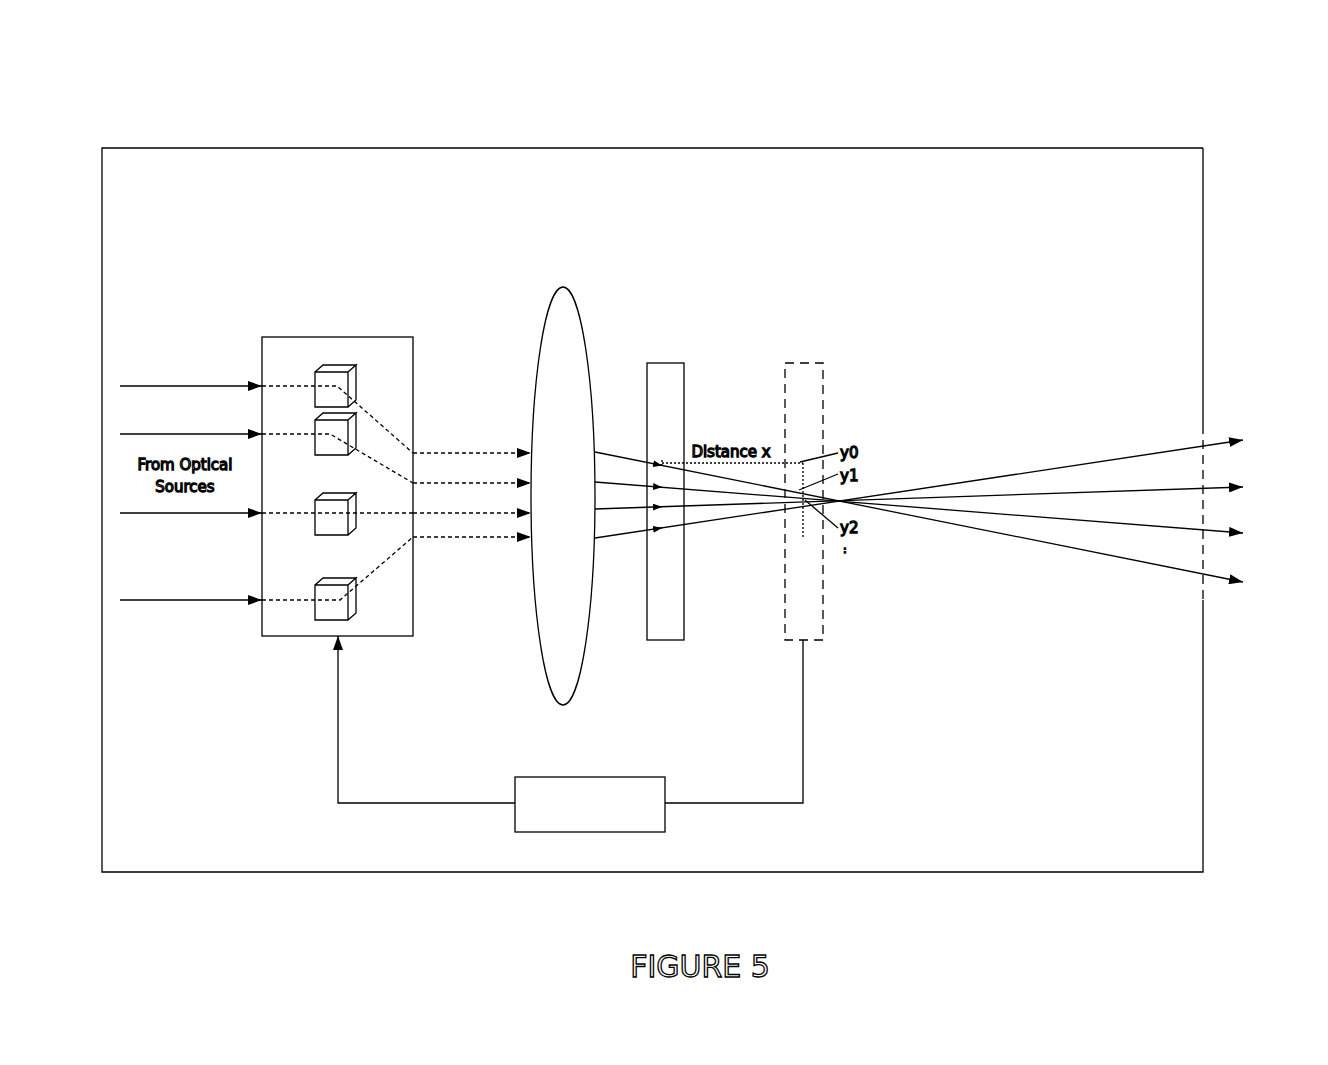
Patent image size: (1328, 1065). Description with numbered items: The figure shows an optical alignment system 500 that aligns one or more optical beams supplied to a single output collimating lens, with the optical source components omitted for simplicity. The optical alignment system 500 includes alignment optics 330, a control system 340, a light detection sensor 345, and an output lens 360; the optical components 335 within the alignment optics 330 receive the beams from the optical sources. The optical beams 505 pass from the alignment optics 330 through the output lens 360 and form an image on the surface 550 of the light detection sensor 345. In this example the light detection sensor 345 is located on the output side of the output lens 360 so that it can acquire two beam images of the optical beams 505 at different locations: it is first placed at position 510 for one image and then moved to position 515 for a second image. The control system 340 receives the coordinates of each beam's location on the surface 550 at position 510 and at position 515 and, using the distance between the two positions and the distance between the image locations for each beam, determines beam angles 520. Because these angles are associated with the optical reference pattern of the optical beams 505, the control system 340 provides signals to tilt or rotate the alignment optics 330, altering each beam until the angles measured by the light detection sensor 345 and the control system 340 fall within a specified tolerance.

The optical alignment system 500 is at (1088, 118).
The alignment optics 330 is at (337, 462).
The optical components 335 is at (310, 365).
The output lens 360 is at (563, 470).
The optical beams 505 is at (597, 545).
The position 510 is at (657, 479).
The position 515 is at (818, 479).
The surface 550 is at (660, 443).
The beam angles 520 is at (690, 490).
The light detection sensor 345 is at (797, 620).
The control system 340 is at (570, 734).